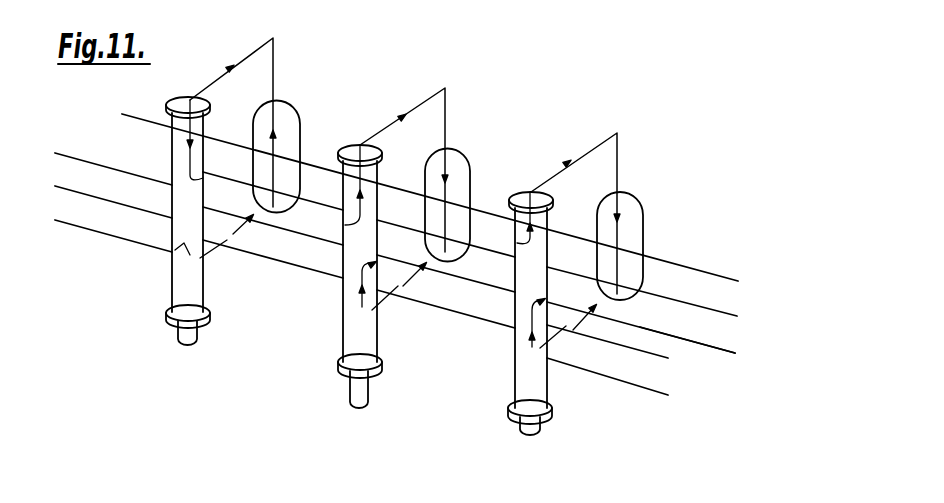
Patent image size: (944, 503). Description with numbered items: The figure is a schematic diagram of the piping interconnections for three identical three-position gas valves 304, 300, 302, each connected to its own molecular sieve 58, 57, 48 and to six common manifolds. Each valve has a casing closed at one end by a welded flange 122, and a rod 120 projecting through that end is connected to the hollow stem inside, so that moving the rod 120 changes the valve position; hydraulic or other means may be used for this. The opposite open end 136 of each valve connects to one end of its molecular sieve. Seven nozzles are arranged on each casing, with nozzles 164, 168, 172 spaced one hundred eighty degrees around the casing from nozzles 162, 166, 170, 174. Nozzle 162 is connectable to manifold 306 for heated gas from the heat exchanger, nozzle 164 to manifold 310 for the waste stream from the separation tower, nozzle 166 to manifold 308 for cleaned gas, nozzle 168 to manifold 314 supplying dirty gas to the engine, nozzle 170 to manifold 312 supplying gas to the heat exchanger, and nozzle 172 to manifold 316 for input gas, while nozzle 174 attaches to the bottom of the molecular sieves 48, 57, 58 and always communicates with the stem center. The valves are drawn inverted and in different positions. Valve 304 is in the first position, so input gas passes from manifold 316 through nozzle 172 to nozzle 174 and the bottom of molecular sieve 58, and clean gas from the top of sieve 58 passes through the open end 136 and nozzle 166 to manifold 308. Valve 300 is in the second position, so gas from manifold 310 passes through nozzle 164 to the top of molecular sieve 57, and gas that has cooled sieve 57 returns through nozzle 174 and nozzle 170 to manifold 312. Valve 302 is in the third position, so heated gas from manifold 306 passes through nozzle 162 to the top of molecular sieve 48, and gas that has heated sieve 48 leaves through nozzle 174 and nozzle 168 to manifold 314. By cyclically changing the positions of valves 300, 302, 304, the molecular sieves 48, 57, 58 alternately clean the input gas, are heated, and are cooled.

The molecular sieve 48 is at (628, 204).
The molecular sieve 57 is at (460, 159).
The molecular sieve 58 is at (288, 116).
The rod 120 is at (181, 334).
The flange 122 is at (166, 316).
The open end 136 is at (177, 100).
The nozzle 162 is at (206, 147).
The nozzle 164 is at (174, 178).
The nozzle 166 is at (206, 178).
The nozzle 168 is at (174, 213).
The nozzle 170 is at (205, 211).
The nozzle 172 is at (171, 249).
The nozzle 174 is at (214, 246).
The three-position valve 300 is at (375, 344).
The three-position valve 302 is at (540, 398).
The three-position valve 304 is at (205, 289).
The manifold 306 is at (686, 253).
The manifold 308 is at (664, 292).
The manifold 310 is at (656, 318).
The manifold 312 is at (690, 342).
The manifold 314 is at (648, 352).
The manifold 316 is at (640, 387).